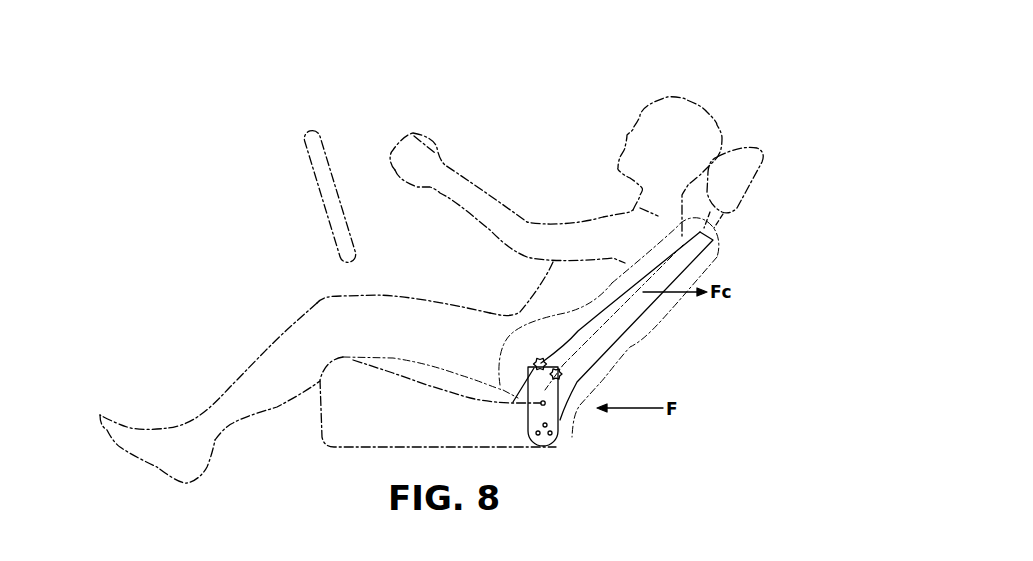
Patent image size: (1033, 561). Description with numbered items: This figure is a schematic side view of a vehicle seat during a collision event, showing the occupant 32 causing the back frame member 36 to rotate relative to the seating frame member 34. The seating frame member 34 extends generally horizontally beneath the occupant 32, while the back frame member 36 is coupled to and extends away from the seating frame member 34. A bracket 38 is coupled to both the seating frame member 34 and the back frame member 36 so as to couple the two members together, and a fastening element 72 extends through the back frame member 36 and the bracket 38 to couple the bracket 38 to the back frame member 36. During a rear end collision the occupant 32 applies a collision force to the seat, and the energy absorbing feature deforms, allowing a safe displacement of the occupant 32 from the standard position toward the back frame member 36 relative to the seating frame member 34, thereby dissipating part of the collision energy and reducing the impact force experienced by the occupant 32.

The occupant 32 is at (656, 112).
The seating frame member 34 is at (368, 437).
The back frame member 36 is at (706, 258).
The bracket 38 is at (552, 434).
The fastening element 72 is at (534, 366).